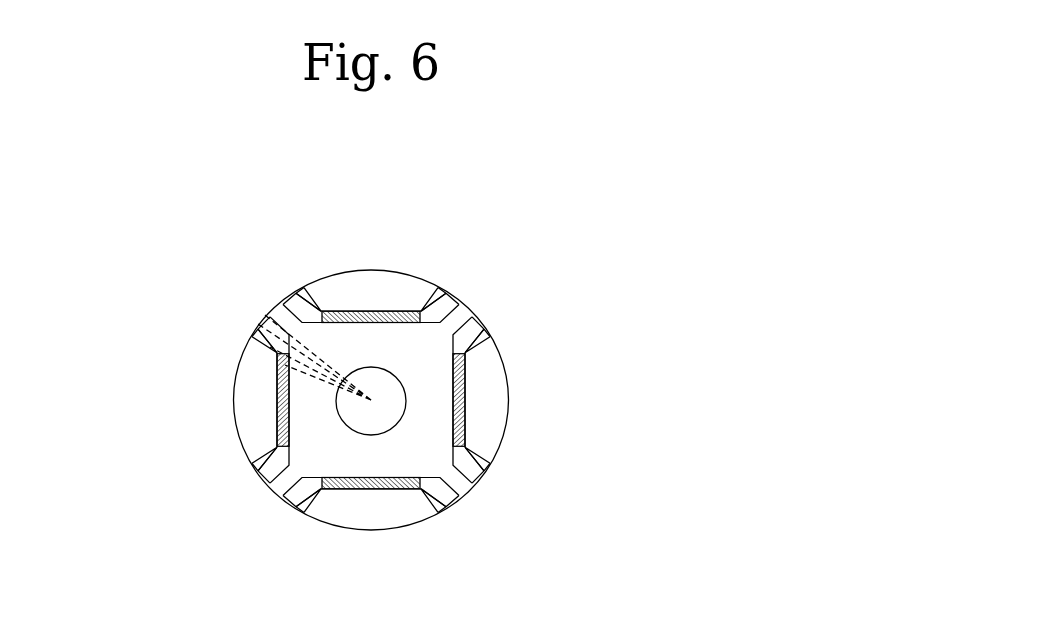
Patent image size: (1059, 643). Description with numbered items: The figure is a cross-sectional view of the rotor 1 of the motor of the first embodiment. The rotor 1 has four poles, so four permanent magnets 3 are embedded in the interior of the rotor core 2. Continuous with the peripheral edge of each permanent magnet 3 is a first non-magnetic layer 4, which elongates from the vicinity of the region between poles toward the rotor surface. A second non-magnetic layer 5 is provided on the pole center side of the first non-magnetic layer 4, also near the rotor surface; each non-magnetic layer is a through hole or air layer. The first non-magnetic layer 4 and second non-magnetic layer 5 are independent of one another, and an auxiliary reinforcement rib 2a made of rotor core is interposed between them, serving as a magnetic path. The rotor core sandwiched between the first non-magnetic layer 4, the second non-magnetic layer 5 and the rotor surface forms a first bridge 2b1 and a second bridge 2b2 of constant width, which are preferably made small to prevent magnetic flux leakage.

The rotor 1 is at (468, 507).
The rotor core 2 is at (487, 373).
The auxiliary reinforcement rib 2a is at (468, 347).
The first bridge 2b1 is at (470, 478).
The second bridge 2b2 is at (478, 466).
The permanent magnet 3 is at (320, 300).
The first non-magnetic layer 4 is at (441, 318).
The second non-magnetic layer 5 is at (438, 288).